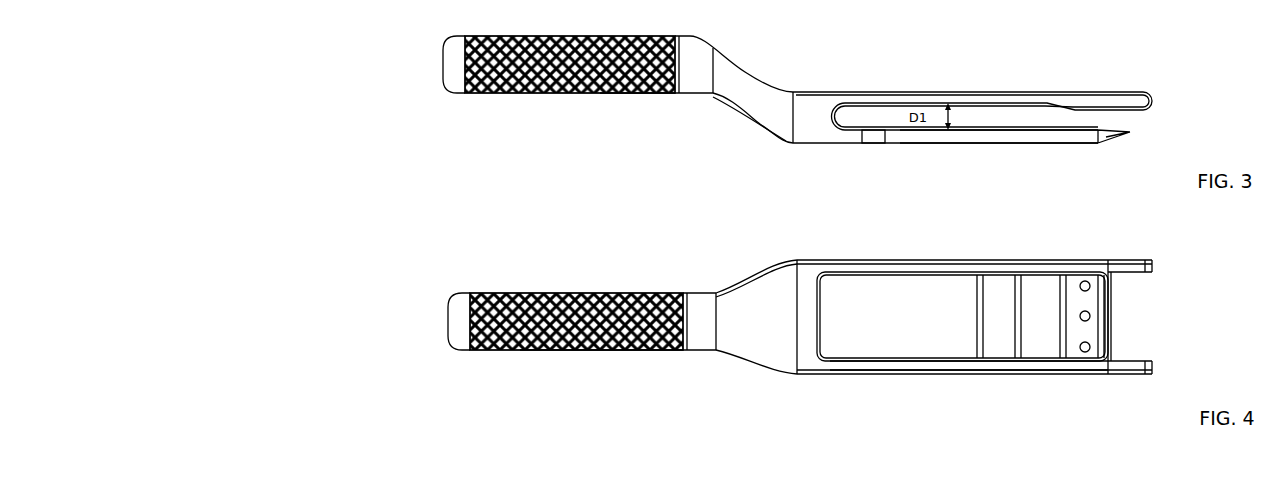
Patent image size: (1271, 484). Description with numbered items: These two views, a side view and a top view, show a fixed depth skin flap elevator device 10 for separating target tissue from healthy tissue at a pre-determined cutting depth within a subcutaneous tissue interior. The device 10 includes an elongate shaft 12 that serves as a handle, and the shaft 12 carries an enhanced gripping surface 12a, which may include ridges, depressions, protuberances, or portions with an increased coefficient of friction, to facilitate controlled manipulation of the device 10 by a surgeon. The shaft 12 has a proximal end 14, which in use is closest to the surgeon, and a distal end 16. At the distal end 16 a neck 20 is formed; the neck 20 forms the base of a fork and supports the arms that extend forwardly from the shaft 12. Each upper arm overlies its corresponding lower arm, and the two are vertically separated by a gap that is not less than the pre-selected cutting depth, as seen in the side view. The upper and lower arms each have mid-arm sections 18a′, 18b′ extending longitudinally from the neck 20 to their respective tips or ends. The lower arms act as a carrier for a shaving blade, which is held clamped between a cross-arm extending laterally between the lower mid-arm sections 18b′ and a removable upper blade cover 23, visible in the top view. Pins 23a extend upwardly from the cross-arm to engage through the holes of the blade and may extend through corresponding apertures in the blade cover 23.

In FIG. 3, the device 10 is at (484, 110).
In FIG. 3, the elongate shaft 12 is at (539, 102).
In FIG. 4, the elongate shaft 12 is at (504, 359).
In FIG. 3, the enhanced gripping surface 12a is at (648, 80).
In FIG. 4, the enhanced gripping surface 12a is at (552, 348).
In FIG. 3, the proximal end 14 is at (448, 62).
In FIG. 4, the proximal end 14 is at (466, 328).
In FIG. 3, the distal end 16 is at (697, 47).
In FIG. 4, the distal end 16 is at (702, 303).
In FIG. 3, the mid-arm section 18a′ is at (936, 94).
In FIG. 4, the mid-arm section 18a′ is at (1017, 368).
In FIG. 3, the mid-arm section 18b′ is at (978, 140).
In FIG. 3, the neck 20 is at (790, 133).
In FIG. 4, the neck 20 is at (756, 290).
In FIG. 4, the upper blade cover 23 is at (1093, 330).
In FIG. 4, the pins 23a is at (1092, 284).